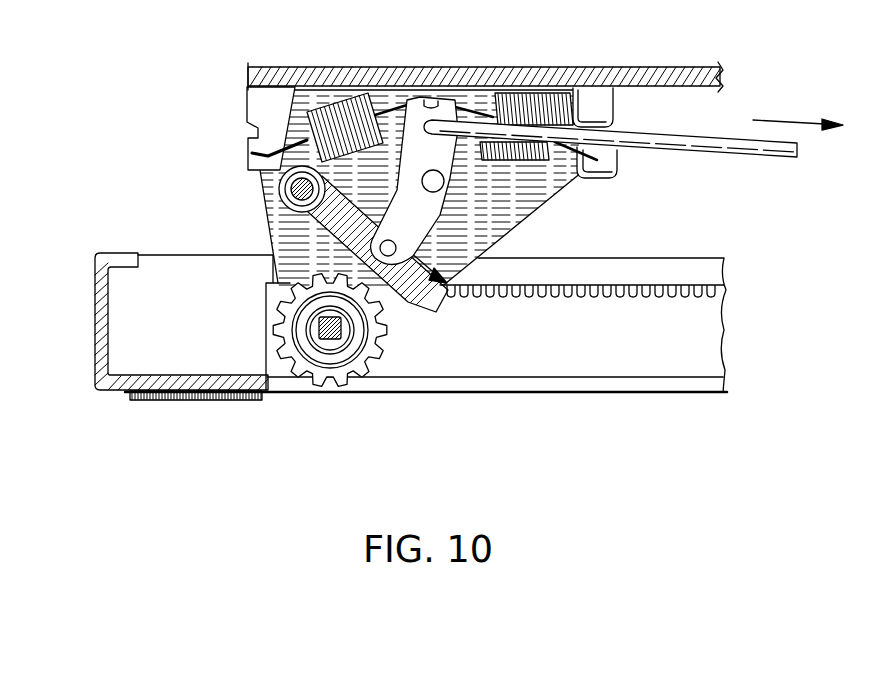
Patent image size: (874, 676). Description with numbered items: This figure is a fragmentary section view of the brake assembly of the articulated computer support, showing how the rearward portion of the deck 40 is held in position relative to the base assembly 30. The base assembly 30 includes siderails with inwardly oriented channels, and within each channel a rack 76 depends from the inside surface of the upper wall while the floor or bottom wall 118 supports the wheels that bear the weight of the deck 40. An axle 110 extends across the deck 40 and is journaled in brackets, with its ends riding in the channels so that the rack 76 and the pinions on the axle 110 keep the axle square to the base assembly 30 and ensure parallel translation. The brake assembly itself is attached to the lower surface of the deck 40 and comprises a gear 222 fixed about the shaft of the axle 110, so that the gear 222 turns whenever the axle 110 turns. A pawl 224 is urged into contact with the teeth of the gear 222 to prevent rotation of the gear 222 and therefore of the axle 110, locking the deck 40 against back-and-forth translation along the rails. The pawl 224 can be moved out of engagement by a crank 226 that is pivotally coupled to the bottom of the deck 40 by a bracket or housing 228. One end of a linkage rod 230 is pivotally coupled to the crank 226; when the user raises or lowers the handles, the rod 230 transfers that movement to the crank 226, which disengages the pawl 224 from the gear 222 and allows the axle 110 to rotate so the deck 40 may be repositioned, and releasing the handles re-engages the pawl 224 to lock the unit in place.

The base assembly 30 is at (152, 238).
The deck 40 is at (647, 58).
The rack 76 is at (560, 293).
The axle 110 is at (290, 333).
The bottom wall 118 is at (580, 378).
The gear 222 is at (363, 348).
The pawl 224 is at (407, 307).
The crank 226 is at (427, 212).
The bracket or housing 228 is at (272, 241).
The linkage rod 230 is at (672, 147).